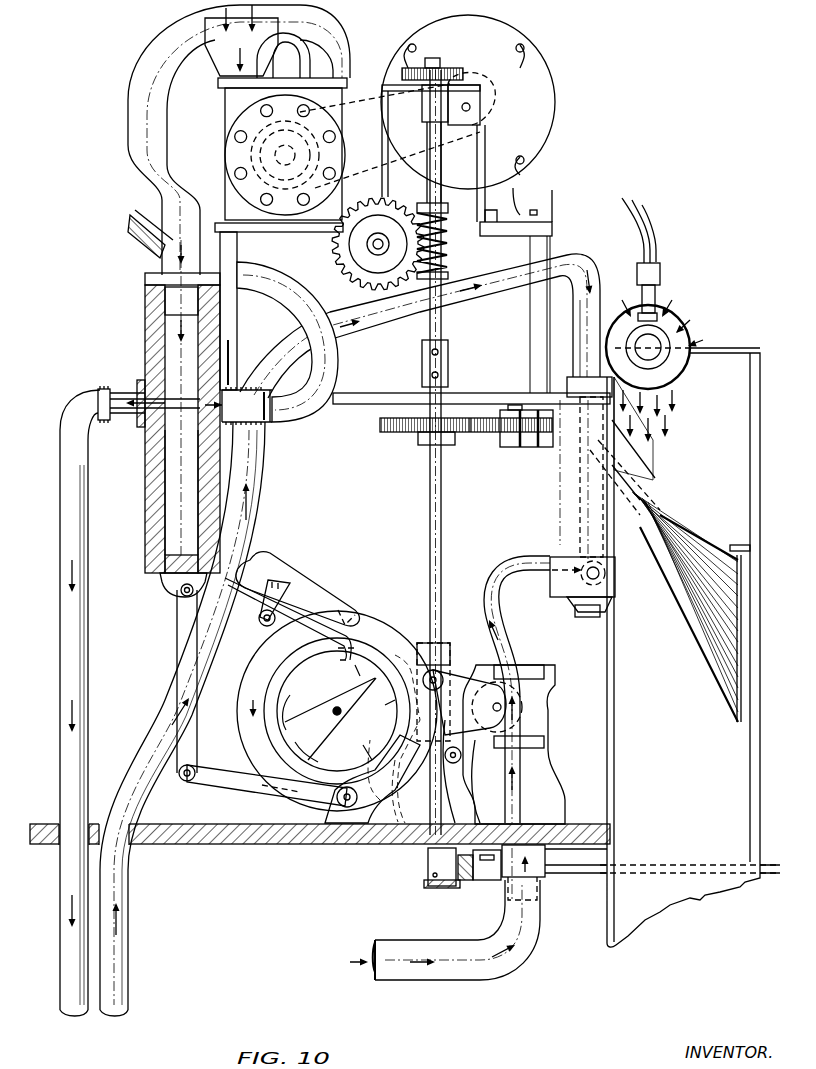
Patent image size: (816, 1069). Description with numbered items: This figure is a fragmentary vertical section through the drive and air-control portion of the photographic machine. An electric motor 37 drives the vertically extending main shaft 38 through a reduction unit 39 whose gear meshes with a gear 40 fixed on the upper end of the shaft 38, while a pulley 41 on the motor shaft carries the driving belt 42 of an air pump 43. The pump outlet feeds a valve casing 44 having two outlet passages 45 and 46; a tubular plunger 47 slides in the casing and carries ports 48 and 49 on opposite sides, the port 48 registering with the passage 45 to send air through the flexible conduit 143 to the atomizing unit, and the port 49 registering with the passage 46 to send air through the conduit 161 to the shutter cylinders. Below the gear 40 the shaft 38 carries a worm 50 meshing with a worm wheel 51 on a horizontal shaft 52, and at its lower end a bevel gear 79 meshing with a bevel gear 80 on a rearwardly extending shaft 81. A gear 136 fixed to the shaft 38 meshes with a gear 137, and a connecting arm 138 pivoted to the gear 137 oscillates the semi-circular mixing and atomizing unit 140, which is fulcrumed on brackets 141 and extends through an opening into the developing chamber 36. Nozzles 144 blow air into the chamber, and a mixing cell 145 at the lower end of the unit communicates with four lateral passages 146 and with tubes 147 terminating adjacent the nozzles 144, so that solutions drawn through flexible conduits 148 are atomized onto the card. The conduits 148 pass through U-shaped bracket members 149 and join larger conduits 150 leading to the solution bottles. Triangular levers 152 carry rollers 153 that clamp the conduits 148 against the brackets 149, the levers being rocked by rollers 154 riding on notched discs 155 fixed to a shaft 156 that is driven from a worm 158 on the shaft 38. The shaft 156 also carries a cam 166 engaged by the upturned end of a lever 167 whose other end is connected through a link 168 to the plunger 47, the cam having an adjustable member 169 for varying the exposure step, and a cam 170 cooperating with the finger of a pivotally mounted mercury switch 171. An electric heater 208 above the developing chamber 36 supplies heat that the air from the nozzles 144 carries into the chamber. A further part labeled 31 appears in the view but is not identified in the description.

The guide bar 31 is at (745, 634).
The developing chamber 36 is at (750, 788).
The electric motor 37 is at (536, 66).
The vertically extending shaft 38 is at (436, 188).
The reduction unit 39 is at (480, 152).
The gear 40 is at (450, 68).
The pulley 41 is at (490, 105).
The driving belt 42 is at (358, 110).
The air pump 43 is at (236, 92).
The valve casing 44 is at (145, 287).
The outlet passage 45 is at (130, 392).
The outlet passage 46 is at (235, 390).
The tubular plunger 47 is at (150, 476).
The port 48 is at (162, 407).
The port 49 is at (222, 360).
The worm 50 is at (446, 262).
The worm wheel 51 is at (355, 258).
The horizontal shaft 52 is at (376, 232).
The bevel gear 79 is at (425, 886).
The bevel gear 80 is at (455, 882).
The rotary shaft 81 is at (578, 878).
The gear 136 is at (398, 432).
The gear 137 is at (494, 433).
The connecting arm 138 is at (540, 445).
The mixing and atomizing unit 140 is at (560, 514).
The brackets 141 is at (567, 380).
The flexible conduit 143 is at (395, 318).
The nozzles 144 is at (650, 500).
The mixing cell 145 is at (610, 594).
The passages 146 is at (560, 556).
The tubes 147 is at (610, 570).
The flexible conduits 148 is at (520, 636).
The U-shaped bracket members 149 is at (552, 703).
The larger flexible conduits 150 is at (414, 972).
The triangular levers 152 is at (465, 690).
The rollers 153 is at (500, 730).
The rollers 154 is at (440, 676).
The spaced discs 155 is at (382, 625).
The shaft 156 is at (337, 708).
The worm 158 is at (445, 652).
The conduit 161 is at (258, 290).
The cam 166 is at (315, 665).
The lever 167 is at (258, 792).
The link 168 is at (186, 696).
The adjustable member 169 is at (355, 702).
The cam 170 is at (283, 672).
The mercury switch 171 is at (315, 592).
The electric heater 208 is at (685, 322).